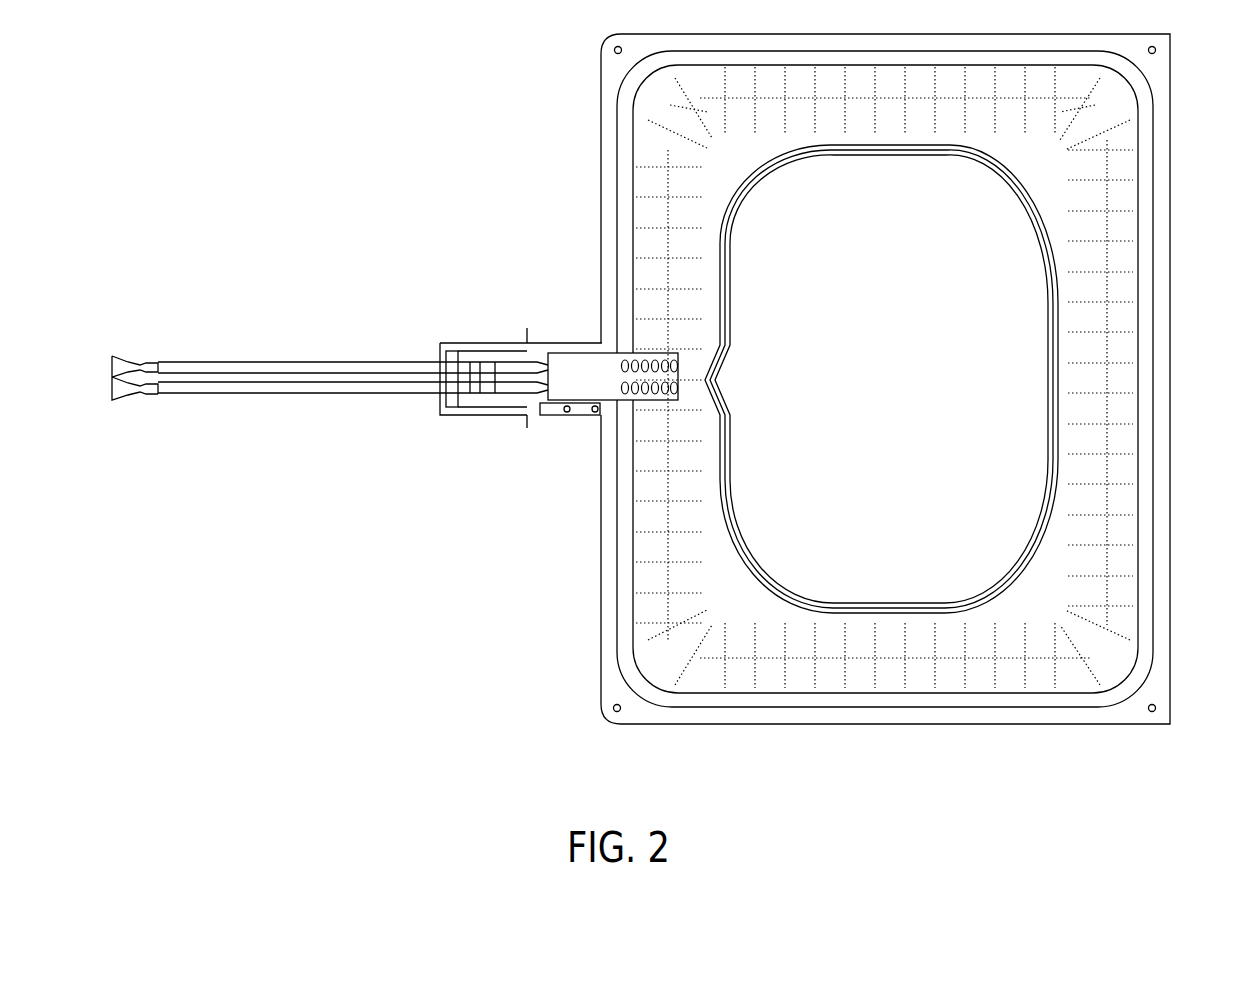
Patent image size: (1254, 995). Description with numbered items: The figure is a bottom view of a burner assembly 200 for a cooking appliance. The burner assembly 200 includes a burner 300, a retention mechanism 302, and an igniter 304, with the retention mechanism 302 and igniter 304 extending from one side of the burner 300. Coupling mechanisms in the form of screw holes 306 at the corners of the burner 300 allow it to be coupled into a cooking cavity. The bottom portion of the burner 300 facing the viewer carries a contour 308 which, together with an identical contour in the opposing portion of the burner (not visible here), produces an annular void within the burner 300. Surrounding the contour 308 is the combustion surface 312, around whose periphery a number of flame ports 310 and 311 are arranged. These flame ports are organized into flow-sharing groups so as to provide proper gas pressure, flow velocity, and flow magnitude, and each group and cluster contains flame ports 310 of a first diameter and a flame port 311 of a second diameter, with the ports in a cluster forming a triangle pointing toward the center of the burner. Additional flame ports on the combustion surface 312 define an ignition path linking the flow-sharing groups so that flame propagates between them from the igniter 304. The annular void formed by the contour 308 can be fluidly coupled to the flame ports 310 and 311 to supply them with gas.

The burner assembly 200 is at (512, 740).
The burner 300 is at (1071, 724).
The retention mechanism 302 is at (527, 420).
The igniter 304 is at (589, 338).
The screw holes 306 is at (1150, 716).
The contour 308 is at (731, 257).
The flame ports of a first diameter 310 is at (1098, 182).
The flame port of a second diameter 311 is at (1097, 243).
The combustion surface 312 is at (990, 600).